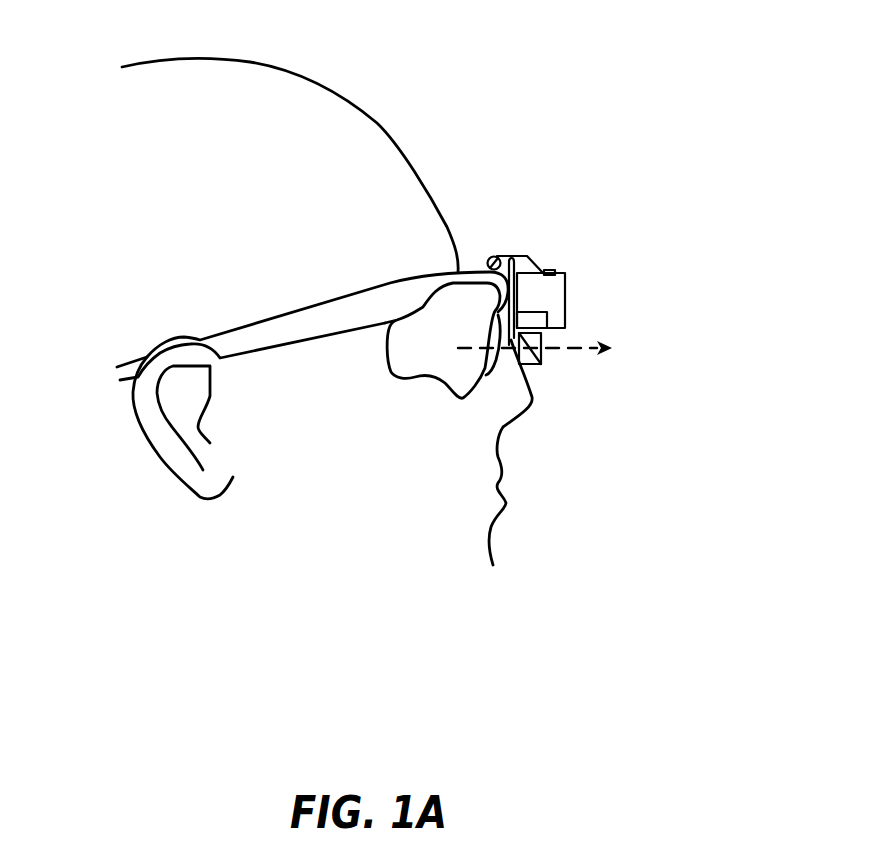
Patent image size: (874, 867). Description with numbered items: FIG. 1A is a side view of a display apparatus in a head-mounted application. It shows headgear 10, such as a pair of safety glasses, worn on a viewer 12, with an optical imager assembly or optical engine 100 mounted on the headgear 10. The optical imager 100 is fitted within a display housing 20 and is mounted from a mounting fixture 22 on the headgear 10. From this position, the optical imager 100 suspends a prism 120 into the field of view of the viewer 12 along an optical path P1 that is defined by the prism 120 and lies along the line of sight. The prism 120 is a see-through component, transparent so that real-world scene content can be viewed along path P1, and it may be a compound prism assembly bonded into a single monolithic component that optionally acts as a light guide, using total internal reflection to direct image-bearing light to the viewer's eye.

The headgear 10 is at (233, 327).
The viewer 12 is at (343, 98).
The display housing 20 is at (565, 283).
The mounting fixture 22 is at (503, 253).
The optical imager 100 is at (645, 322).
The prism 120 is at (541, 364).
The optical path P1 is at (563, 351).